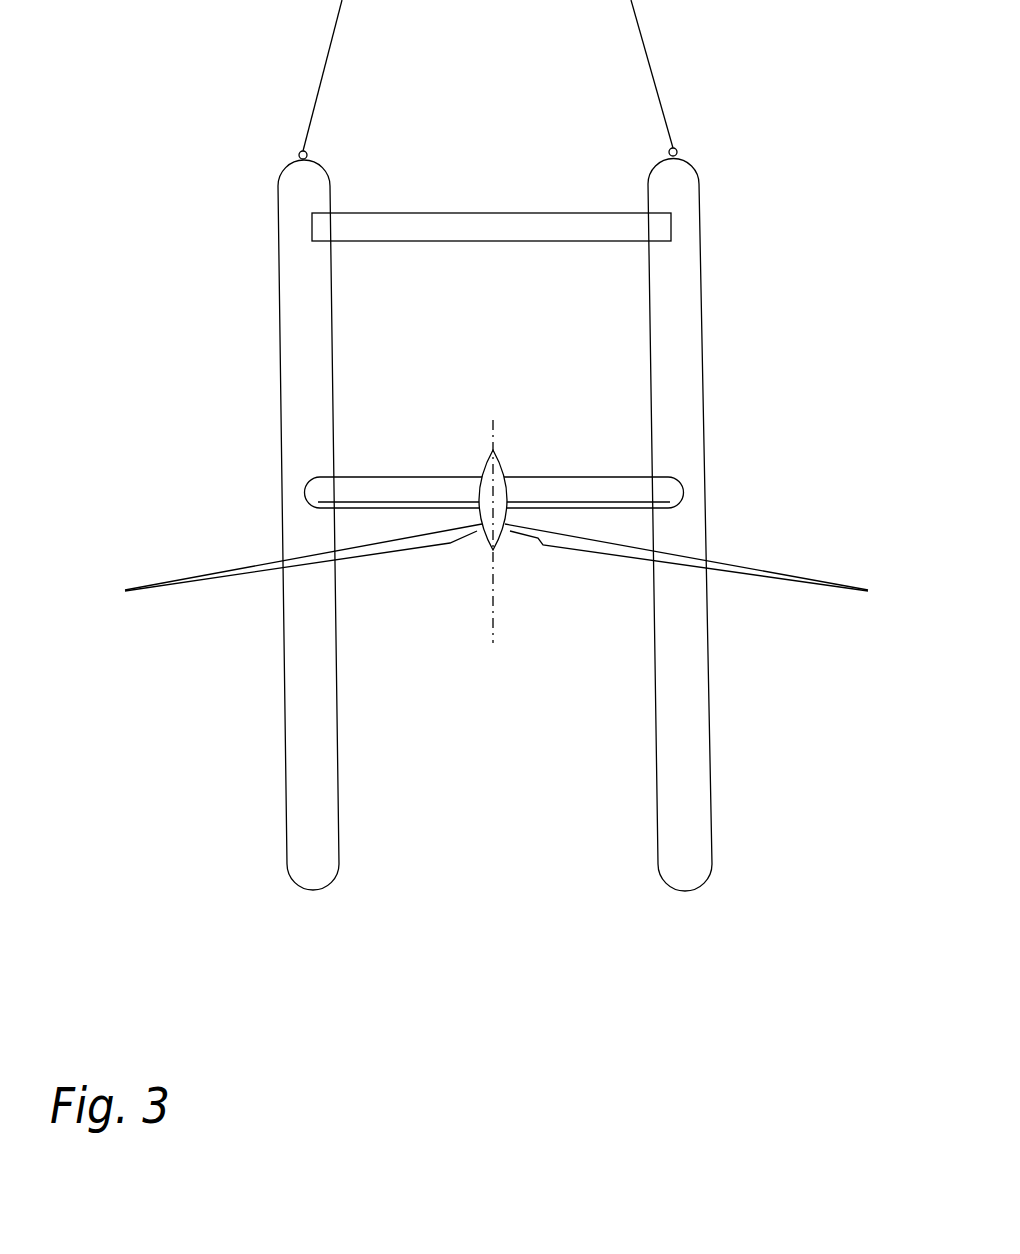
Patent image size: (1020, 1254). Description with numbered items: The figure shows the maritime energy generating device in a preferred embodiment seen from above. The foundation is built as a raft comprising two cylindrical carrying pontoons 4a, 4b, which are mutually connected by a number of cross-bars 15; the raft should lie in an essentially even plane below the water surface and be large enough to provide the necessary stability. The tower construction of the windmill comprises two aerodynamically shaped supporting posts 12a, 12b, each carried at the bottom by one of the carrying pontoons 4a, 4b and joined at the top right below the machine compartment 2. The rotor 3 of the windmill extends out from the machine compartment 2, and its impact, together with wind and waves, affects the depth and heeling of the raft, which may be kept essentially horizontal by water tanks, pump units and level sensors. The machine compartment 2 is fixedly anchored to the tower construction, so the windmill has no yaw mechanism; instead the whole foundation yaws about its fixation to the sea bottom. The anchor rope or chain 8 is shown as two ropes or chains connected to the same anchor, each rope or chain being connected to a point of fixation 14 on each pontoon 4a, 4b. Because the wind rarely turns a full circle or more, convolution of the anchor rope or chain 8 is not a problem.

The anchor rope or chain 8 is at (650, 63).
The point of fixation 14 is at (677, 152).
The cross-bar 15 is at (490, 213).
The supporting post 12a is at (617, 477).
The supporting post 12b is at (407, 477).
The machine compartment 2 is at (499, 453).
The rotor 3 is at (787, 575).
The carrying pontoon 4a is at (712, 807).
The carrying pontoon 4b is at (339, 807).